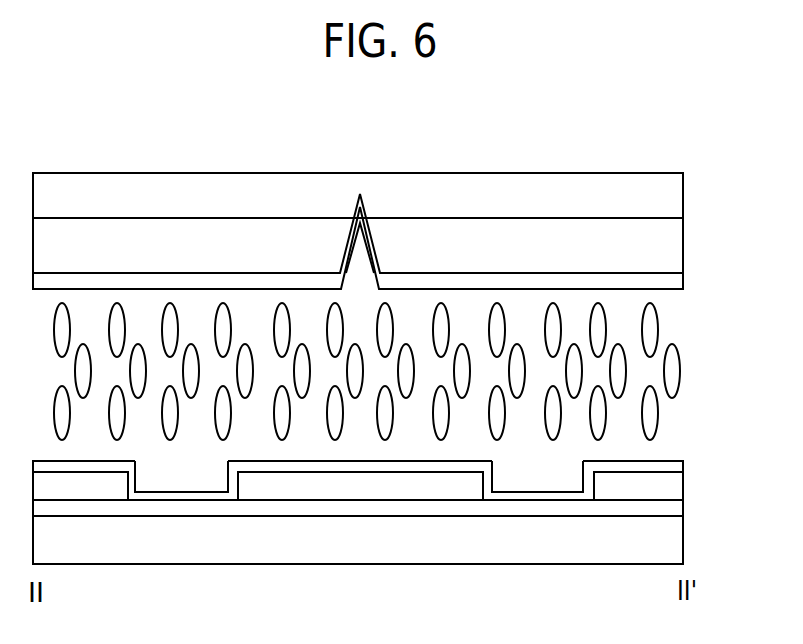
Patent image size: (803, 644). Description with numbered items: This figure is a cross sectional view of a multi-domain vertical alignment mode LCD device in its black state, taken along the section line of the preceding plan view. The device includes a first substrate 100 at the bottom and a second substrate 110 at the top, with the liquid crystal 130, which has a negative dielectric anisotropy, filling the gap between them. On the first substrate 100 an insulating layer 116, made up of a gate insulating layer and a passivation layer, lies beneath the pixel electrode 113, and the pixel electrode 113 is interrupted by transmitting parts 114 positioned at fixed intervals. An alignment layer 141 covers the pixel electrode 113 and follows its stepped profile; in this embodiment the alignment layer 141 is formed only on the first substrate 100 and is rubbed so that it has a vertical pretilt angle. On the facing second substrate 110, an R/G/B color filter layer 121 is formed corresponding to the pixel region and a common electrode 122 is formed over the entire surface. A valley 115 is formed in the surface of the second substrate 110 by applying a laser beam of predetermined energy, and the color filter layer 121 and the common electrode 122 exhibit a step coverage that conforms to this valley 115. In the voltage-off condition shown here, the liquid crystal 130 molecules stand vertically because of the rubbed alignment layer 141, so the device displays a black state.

The first substrate 100 is at (676, 548).
The insulating layer 116 is at (676, 508).
The pixel electrode 113 is at (676, 491).
The transmitting parts 114 is at (190, 477).
The alignment layer 141 is at (676, 466).
The liquid crystal 130 is at (678, 372).
The common electrode 122 is at (676, 280).
The R/G/B color filter layer 121 is at (676, 242).
The valley 115 is at (358, 277).
The second substrate 110 is at (676, 195).